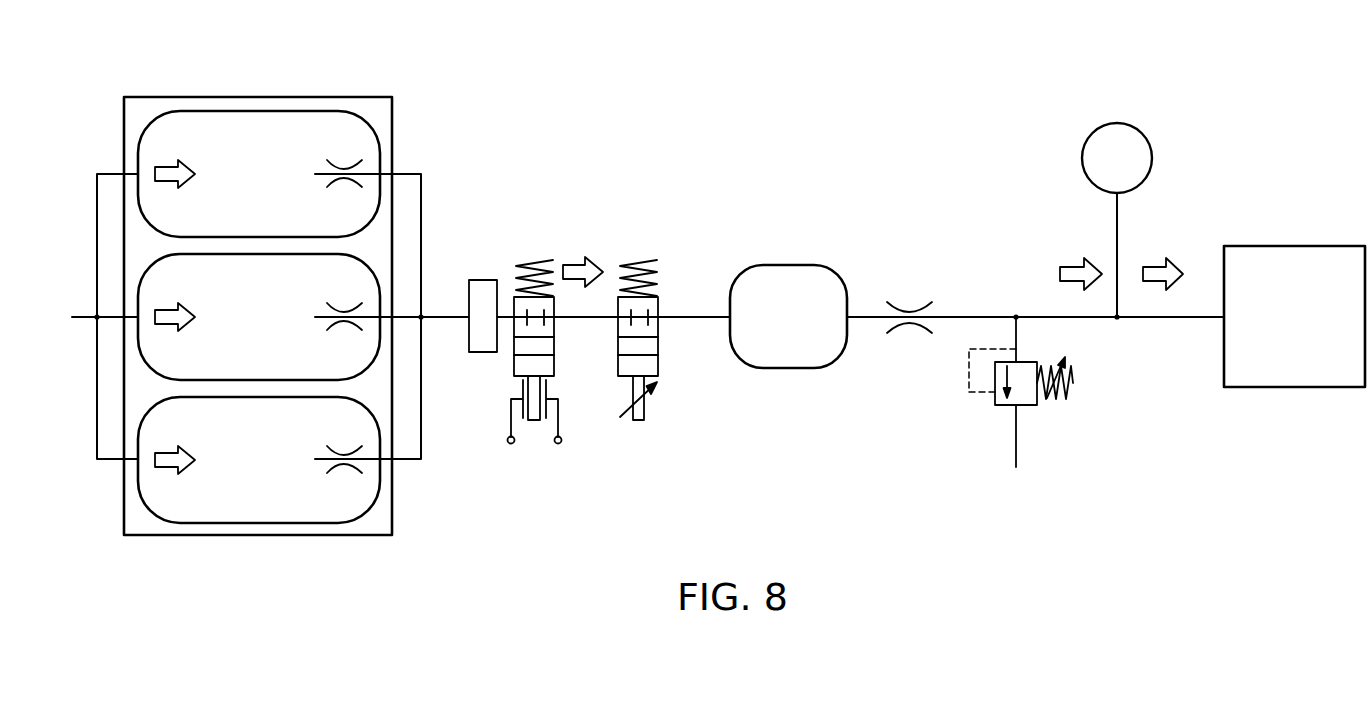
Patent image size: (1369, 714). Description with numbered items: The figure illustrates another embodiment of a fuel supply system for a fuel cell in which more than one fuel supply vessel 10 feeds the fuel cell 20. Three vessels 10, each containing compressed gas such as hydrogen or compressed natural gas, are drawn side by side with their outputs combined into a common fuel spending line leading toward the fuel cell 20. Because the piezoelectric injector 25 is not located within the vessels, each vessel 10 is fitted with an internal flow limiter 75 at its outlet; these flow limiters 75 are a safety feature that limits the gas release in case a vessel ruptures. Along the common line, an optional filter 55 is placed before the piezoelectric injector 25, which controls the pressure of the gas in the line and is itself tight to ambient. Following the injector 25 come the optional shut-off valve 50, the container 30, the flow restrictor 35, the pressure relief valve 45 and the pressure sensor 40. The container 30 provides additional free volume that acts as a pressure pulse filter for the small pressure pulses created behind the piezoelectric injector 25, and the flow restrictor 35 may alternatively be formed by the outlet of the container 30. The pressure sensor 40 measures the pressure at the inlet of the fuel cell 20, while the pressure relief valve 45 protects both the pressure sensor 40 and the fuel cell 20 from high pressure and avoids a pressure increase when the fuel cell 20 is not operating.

The vessel 10 is at (148, 111).
The internal flow limiter 75 is at (343, 168).
The filter 55 is at (483, 280).
The piezoelectric injector 25 is at (533, 259).
The shut-off valve 50 is at (640, 259).
The container 30 is at (783, 265).
The flow restrictor 35 is at (909, 311).
The pressure relief valve 45 is at (1016, 315).
The pressure sensor 40 is at (1118, 122).
The fuel cell 20 is at (1298, 245).